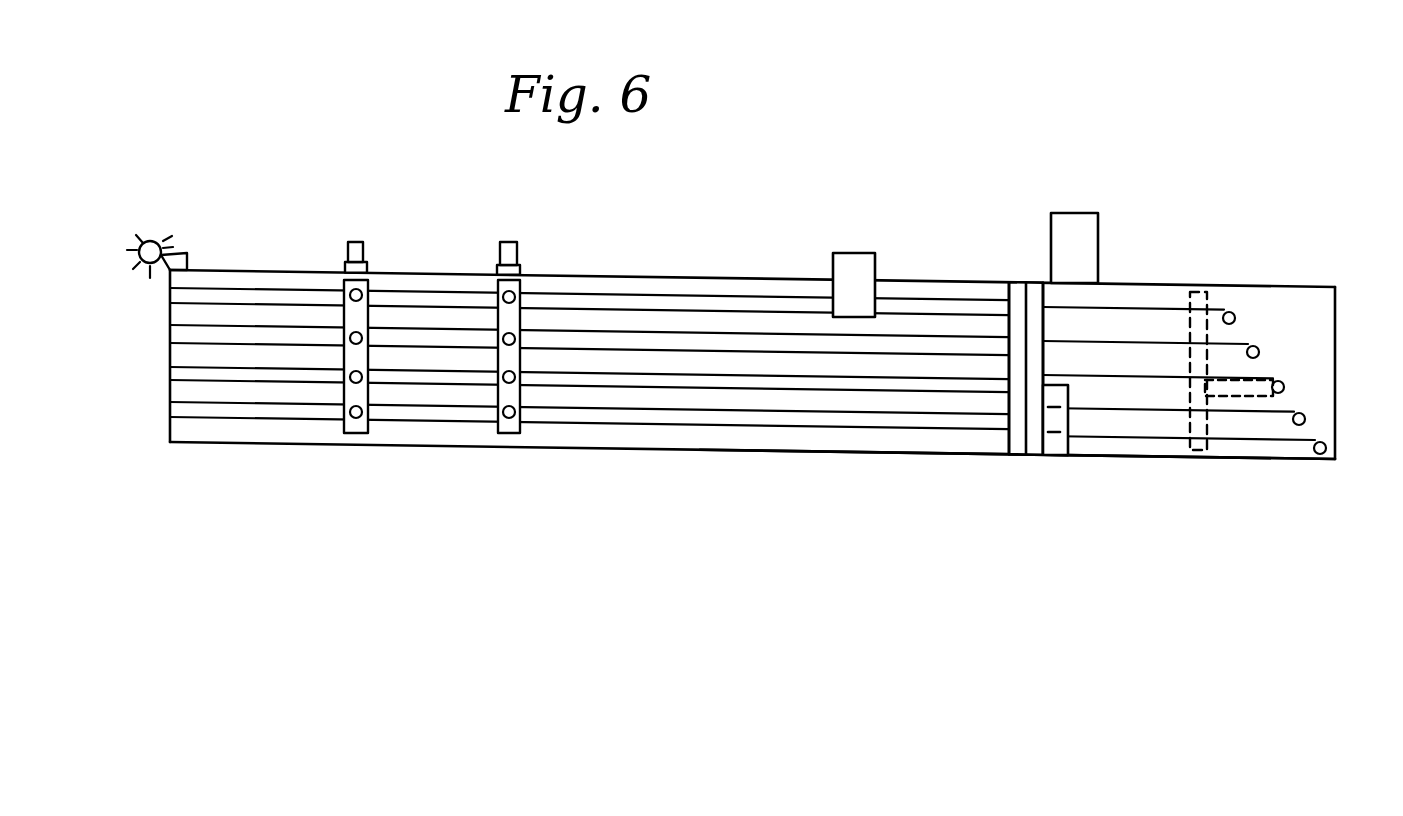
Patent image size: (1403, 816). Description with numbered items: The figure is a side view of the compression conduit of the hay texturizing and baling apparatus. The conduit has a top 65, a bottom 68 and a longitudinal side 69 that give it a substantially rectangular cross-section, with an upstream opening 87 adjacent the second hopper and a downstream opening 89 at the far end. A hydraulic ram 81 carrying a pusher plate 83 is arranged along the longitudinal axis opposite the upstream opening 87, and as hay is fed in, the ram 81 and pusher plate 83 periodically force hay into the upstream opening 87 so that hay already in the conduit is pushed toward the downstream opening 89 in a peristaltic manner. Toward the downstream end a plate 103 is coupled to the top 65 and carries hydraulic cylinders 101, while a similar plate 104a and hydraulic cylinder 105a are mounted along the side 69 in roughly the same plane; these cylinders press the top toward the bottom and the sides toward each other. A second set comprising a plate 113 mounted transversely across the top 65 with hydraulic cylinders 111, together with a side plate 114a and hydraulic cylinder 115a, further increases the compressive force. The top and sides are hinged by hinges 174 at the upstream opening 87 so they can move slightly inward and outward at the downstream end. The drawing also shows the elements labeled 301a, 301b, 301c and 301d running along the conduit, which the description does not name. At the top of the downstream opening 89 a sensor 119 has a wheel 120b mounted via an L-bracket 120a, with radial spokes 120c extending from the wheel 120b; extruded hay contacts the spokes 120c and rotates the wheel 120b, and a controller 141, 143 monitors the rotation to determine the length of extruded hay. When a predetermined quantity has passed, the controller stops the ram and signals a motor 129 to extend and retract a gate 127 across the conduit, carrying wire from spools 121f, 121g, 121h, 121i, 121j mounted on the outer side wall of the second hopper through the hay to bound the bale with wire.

The top 65 is at (686, 272).
The bottom 68 is at (824, 458).
The longitudinal side 69 is at (720, 440).
The downstream opening 89 is at (166, 402).
The string pair 301a is at (212, 407).
The string pair 301b is at (197, 378).
The string pair 301c is at (192, 335).
The string pair 301d is at (183, 295).
The sensor 119 is at (152, 225).
The L-bracket 120a is at (187, 253).
The wheel 120b is at (164, 247).
The radial spokes 120c is at (132, 267).
The plate 113 is at (344, 264).
The hydraulic cylinders 111 is at (354, 242).
The hydraulic cylinder 115a is at (346, 422).
The side plate 114a is at (366, 440).
The hydraulic cylinder 105a is at (503, 294).
The plate 104a is at (502, 428).
The hydraulic cylinders 101 is at (518, 242).
The plate 103 is at (519, 267).
The controller 141 is at (837, 253).
The controller 143 is at (1065, 225).
The hinges 174 is at (1020, 292).
The upstream opening 87 is at (1052, 327).
The gate 127 is at (1032, 445).
The motor 129 is at (1057, 447).
The pusher plate 83 is at (1190, 292).
The hydraulic ram 81 is at (1246, 394).
The spool of wire 121f is at (1328, 450).
The spool of wire 121g is at (1305, 418).
The spool of wire 121h is at (1284, 384).
The spool of wire 121i is at (1260, 348).
The spool of wire 121j is at (1235, 310).